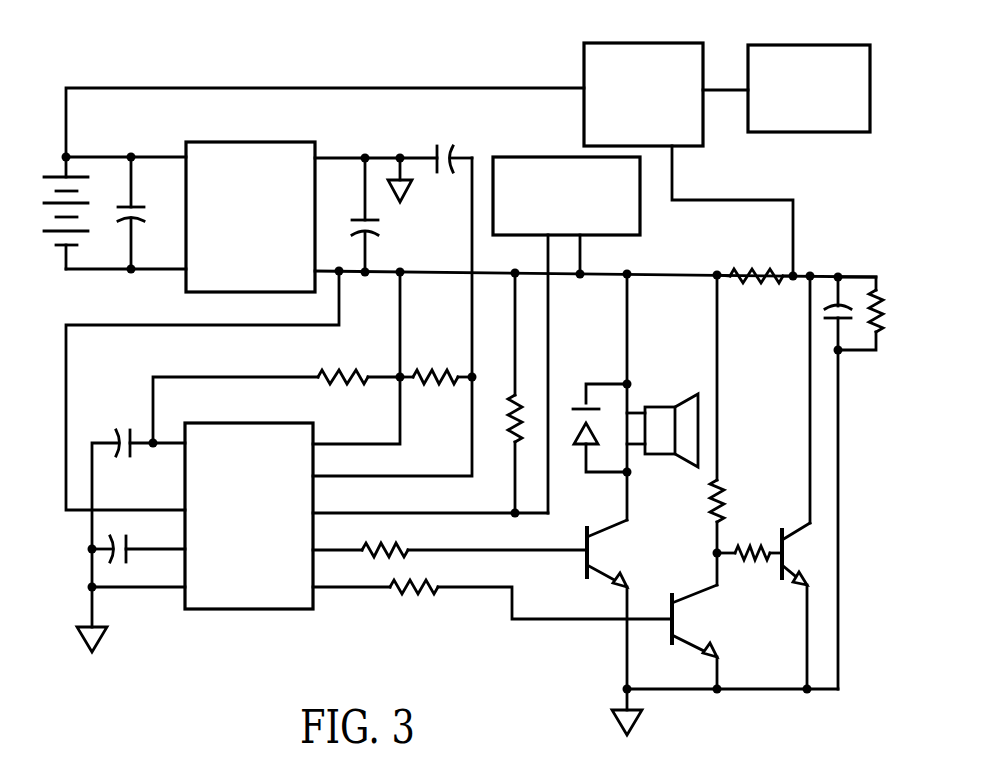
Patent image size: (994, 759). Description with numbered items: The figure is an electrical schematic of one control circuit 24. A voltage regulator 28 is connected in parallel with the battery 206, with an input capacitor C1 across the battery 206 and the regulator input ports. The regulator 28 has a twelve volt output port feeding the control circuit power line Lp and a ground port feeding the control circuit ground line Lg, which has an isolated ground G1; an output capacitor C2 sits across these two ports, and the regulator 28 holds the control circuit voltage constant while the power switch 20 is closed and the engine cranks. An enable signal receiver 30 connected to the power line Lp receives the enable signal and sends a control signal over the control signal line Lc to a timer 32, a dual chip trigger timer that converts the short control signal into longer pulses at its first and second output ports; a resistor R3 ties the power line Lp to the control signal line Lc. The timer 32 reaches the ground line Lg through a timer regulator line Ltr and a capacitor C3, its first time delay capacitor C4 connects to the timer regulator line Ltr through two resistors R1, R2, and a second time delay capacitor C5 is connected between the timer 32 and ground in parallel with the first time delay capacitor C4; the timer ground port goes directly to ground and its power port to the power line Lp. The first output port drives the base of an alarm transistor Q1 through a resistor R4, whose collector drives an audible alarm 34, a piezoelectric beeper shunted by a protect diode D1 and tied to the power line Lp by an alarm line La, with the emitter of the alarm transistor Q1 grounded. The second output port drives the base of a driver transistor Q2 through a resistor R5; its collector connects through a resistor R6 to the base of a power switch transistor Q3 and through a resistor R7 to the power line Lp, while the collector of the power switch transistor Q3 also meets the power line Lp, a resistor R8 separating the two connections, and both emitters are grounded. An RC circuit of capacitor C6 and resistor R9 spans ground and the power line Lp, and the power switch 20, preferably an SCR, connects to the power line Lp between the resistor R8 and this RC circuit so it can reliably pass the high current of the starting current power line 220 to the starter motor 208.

The power switch 20 is at (622, 42).
The starter motor 208 is at (802, 44).
The starting current power line 220 is at (240, 86).
The voltage regulator 28 is at (234, 141).
The battery 206 is at (82, 203).
The input capacitor C1 is at (138, 205).
The control circuit ground line Lg is at (367, 157).
The capacitor C3 is at (447, 151).
The isolated ground G1 is at (423, 184).
The output capacitor C2 is at (378, 221).
The control circuit power line Lp is at (441, 270).
The timer regulator line Ltr is at (471, 305).
The enable signal receiver 30 is at (640, 208).
The resistor R8 is at (771, 270).
The resistor R9 is at (877, 289).
The capacitor C6 is at (845, 319).
The control circuit 24 is at (118, 311).
The control signal line Lc is at (549, 311).
The alarm line La is at (628, 311).
The audible alarm 34 is at (674, 406).
The resistor R2 is at (340, 375).
The resistor R1 is at (413, 375).
The resistor R3 is at (510, 425).
The protect diode D1 is at (580, 449).
The first time delay capacitor C4 is at (132, 433).
The resistor R7 is at (724, 501).
The alarm transistor Q1 is at (603, 537).
The power switch transistor Q3 is at (800, 538).
The second time delay capacitor C5 is at (129, 548).
The resistor R4 is at (400, 554).
The driver transistor Q2 is at (690, 598).
The resistor R6 is at (742, 562).
The resistor R5 is at (430, 591).
The timer 32 is at (250, 610).